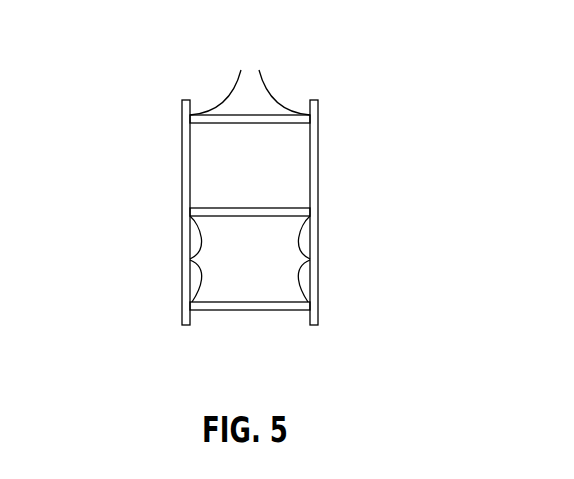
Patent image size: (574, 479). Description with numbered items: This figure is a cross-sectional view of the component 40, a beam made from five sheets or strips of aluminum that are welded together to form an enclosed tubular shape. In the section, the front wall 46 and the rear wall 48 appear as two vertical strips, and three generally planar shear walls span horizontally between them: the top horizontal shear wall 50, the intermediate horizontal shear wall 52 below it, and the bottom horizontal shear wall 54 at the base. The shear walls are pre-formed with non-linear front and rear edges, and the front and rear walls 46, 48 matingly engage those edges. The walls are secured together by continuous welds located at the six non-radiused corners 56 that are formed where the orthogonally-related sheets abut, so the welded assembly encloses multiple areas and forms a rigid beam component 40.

The component 40 is at (336, 86).
The front wall 46 is at (182, 160).
The rear wall 48 is at (318, 150).
The top horizontal shear wall 50 is at (253, 124).
The intermediate horizontal shear wall 52 is at (250, 217).
The bottom horizontal shear wall 54 is at (252, 311).
The non-radiused corners 56 is at (360, 266).